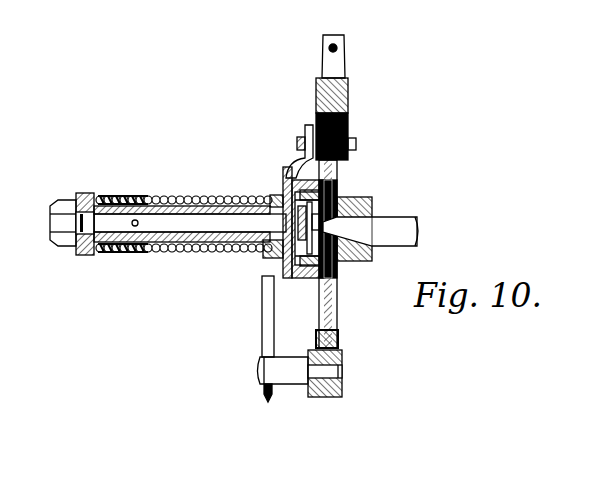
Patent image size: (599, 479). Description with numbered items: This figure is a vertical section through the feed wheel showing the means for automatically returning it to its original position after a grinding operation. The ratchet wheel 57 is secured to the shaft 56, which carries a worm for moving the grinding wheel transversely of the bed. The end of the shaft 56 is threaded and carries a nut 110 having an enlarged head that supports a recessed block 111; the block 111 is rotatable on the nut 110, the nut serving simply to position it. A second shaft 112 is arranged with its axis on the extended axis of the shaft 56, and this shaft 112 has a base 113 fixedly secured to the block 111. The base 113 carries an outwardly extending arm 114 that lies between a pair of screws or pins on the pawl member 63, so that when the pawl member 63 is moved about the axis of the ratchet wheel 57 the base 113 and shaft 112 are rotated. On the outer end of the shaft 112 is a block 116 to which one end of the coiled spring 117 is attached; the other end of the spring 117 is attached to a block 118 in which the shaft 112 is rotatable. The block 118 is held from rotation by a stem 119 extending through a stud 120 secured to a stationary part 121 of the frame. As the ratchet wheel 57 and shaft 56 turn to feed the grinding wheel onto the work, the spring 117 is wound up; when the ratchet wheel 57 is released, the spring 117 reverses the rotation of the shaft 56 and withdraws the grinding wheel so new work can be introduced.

The shaft 56 is at (414, 232).
The ratchet wheel 57 is at (339, 310).
The pawl member 63 is at (350, 102).
The nut 110 is at (298, 258).
The recessed block 111 is at (316, 272).
The shaft 112 is at (198, 236).
The base 113 is at (283, 170).
The arm 114 is at (301, 128).
The block 116 is at (86, 257).
The coiled spring 117 is at (142, 205).
The block 118 is at (276, 256).
The stem 119 is at (263, 351).
The stud 120 is at (299, 375).
The stationary part 121 is at (342, 391).